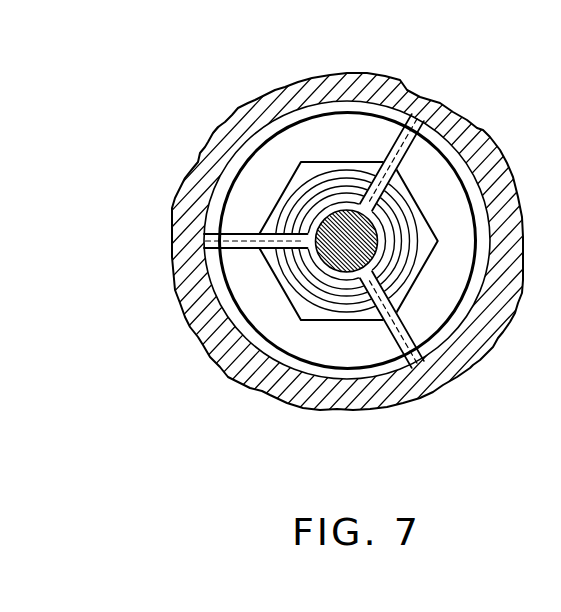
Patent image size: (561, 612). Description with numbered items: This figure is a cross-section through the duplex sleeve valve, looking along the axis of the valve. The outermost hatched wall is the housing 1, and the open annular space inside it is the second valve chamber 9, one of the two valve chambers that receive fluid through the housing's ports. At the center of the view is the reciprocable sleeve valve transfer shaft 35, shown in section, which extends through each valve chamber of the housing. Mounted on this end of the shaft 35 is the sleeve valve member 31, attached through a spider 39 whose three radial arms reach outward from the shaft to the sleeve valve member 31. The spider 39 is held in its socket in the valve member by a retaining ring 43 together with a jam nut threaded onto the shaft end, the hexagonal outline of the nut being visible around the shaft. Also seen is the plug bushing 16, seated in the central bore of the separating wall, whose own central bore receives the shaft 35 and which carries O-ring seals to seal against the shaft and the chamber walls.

The housing 1 is at (438, 390).
The second valve chamber 9 is at (446, 311).
The plug bushing 16 is at (295, 318).
The sleeve valve member 31 is at (353, 373).
The sleeve valve transfer shaft 35 is at (333, 263).
The spider 39 is at (427, 137).
The retaining ring 43 is at (213, 277).